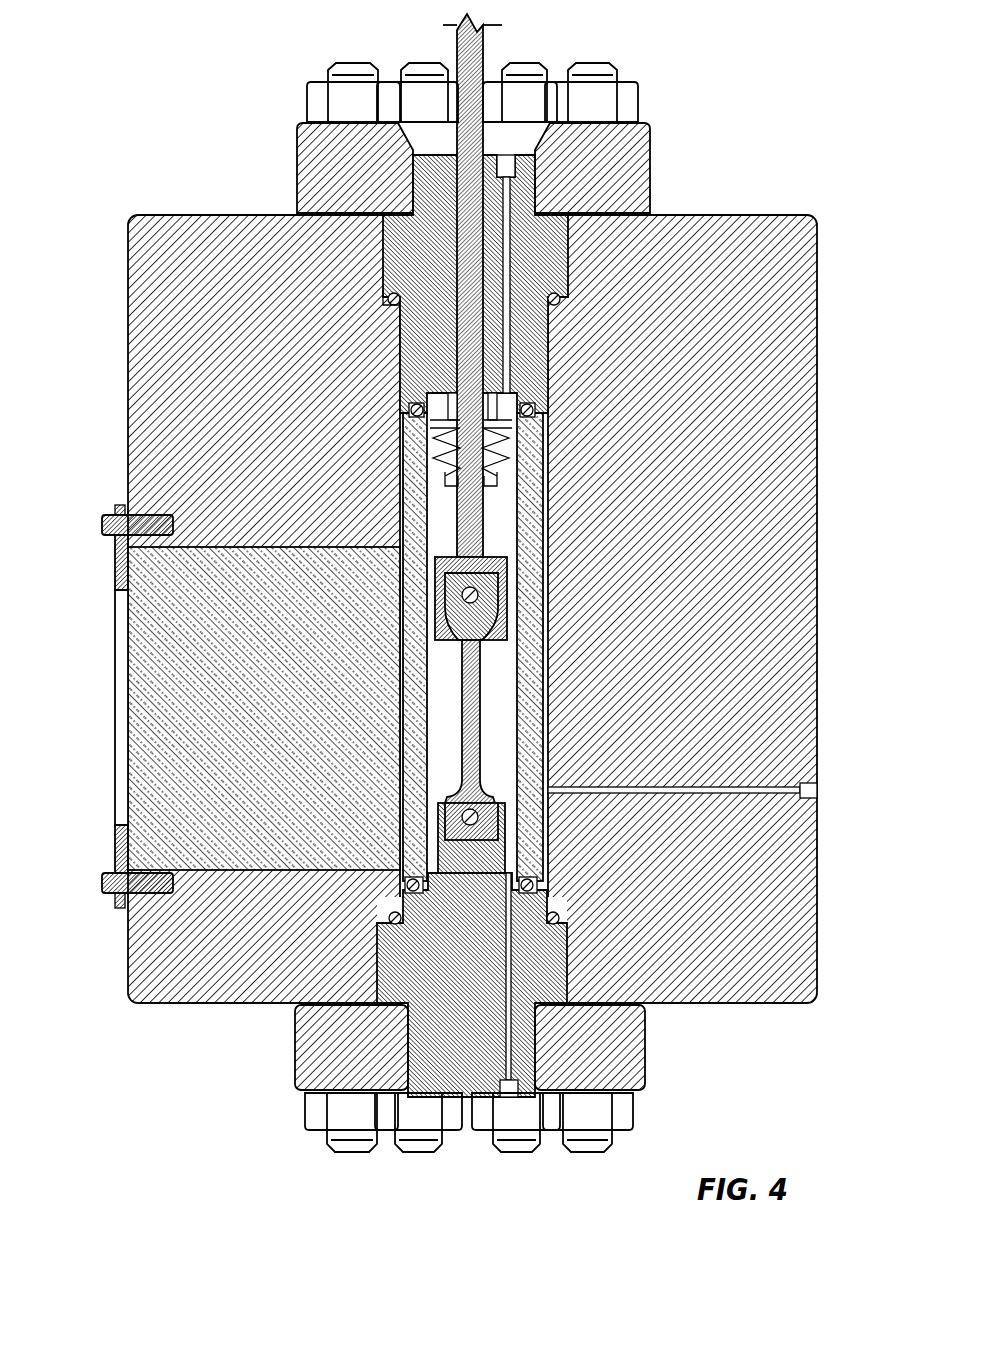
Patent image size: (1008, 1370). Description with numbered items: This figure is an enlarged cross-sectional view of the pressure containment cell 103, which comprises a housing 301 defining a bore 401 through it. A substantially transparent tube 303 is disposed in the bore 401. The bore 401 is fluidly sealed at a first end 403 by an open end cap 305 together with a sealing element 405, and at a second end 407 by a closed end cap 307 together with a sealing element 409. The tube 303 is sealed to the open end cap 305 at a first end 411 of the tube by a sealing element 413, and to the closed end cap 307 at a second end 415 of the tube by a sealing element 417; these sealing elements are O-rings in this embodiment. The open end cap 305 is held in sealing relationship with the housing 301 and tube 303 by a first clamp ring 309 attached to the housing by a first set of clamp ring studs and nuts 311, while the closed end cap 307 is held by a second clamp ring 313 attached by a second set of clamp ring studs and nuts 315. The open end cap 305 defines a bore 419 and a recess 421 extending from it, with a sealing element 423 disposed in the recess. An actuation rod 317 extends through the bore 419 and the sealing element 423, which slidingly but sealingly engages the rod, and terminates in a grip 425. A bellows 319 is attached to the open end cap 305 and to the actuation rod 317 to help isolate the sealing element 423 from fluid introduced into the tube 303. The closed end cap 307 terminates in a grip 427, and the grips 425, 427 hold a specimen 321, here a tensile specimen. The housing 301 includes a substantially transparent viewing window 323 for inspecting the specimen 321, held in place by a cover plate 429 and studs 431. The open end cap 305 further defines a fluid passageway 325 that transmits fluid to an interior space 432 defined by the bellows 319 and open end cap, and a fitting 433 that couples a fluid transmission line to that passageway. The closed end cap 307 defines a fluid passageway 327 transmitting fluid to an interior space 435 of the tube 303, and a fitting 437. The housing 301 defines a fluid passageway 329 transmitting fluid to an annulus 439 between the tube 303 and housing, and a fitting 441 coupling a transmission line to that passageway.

The pressure containment cell 103 is at (797, 210).
The housing 301 is at (710, 727).
The substantially transparent tube 303 is at (395, 460).
The open end cap 305 is at (445, 262).
The closed end cap 307 is at (458, 977).
The first clamp ring 309 is at (378, 179).
The first set of clamp ring studs and nuts 311 is at (355, 95).
The second clamp ring 313 is at (373, 1059).
The second set of clamp ring studs and nuts 315 is at (348, 1115).
The actuation rod 317 is at (507, 583).
The bellows 319 is at (500, 462).
The specimen 321 is at (481, 680).
The substantially transparent viewing window 323 is at (292, 737).
The fluid passageway 325 is at (470, 272).
The fluid passageway 327 is at (556, 920).
The fluid passageway 329 is at (693, 792).
The bore 401 is at (545, 723).
The first end 403 is at (388, 302).
The sealing element 405 is at (392, 296).
The second end 407 is at (532, 887).
The sealing element 409 is at (393, 920).
The first end 411 is at (450, 412).
The sealing element 413 is at (414, 404).
The second end 415 is at (410, 862).
The sealing element 417 is at (414, 882).
The bore 419 is at (510, 338).
The recess 421 is at (495, 405).
The sealing element 423 is at (532, 408).
The grip 425 is at (497, 625).
The grip 427 is at (503, 840).
The cover plate 429 is at (118, 580).
The studs 431 is at (110, 513).
The interior space 432 is at (550, 483).
The fitting 433 is at (515, 166).
The interior space 435 is at (492, 527).
The fitting 437 is at (518, 1090).
The annulus 439 is at (420, 642).
The fitting 441 is at (814, 785).